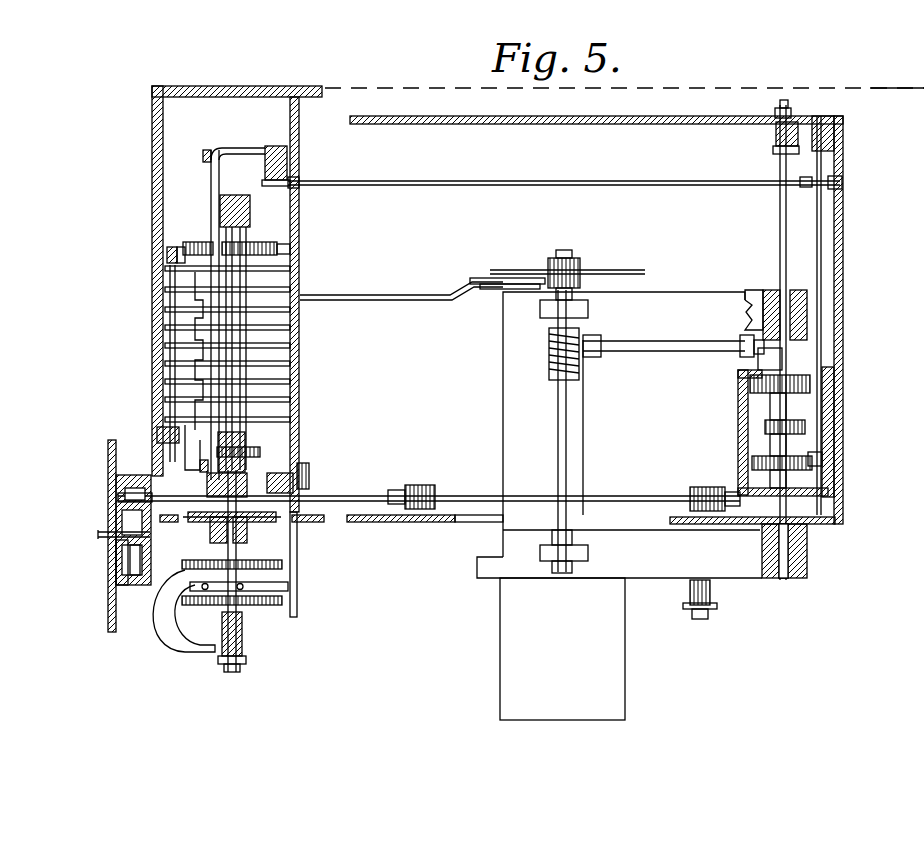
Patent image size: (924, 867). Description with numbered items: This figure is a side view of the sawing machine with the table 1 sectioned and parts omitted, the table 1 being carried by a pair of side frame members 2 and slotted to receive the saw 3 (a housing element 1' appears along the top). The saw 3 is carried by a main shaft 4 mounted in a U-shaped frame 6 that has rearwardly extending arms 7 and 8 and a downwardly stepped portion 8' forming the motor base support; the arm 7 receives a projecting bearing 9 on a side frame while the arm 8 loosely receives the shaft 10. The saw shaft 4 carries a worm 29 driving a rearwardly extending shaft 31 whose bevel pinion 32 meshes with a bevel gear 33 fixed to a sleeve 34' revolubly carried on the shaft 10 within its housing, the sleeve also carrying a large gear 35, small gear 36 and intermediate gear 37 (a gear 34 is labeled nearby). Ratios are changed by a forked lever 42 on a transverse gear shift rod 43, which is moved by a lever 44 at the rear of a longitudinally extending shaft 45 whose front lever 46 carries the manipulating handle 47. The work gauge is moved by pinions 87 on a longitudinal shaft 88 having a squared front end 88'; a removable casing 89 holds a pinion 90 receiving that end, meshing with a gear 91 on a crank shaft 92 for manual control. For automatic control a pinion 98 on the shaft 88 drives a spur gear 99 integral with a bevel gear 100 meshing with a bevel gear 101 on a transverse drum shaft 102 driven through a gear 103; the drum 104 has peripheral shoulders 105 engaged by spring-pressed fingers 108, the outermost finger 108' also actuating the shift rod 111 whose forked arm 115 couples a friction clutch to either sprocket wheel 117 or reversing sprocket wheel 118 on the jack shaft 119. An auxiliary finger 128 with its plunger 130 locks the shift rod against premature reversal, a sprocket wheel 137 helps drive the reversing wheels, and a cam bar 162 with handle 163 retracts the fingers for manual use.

The table 1 is at (538, 285).
The housing cover 1' is at (897, 67).
The side frame members 2 is at (436, 525).
The saw 3 is at (589, 283).
The main shaft 4 is at (577, 470).
The U-shaped frame 6 is at (510, 414).
The arm 7 is at (660, 555).
The arm 8 is at (714, 293).
The downwardly stepped portion 8' is at (585, 649).
The projecting bearing 9 is at (795, 581).
The shaft 10 is at (780, 221).
The worm 29 is at (548, 356).
The rearwardly extending shaft 31 is at (660, 350).
The bevel pinion 32 is at (758, 362).
The bevel gear 33 is at (808, 349).
The gear 34 is at (821, 391).
The sleeve 34' is at (708, 452).
The large gear 35 is at (760, 402).
The small gear 36 is at (752, 446).
The intermediate gear 37 is at (756, 489).
The forked lever 42 is at (812, 467).
The gear shift rod 43 is at (820, 262).
The lever 44 is at (822, 172).
The longitudinally extending shaft 45 is at (520, 184).
The lever 46 is at (272, 172).
The manipulating handle 47 is at (230, 149).
The pinions 87 is at (428, 493).
The shaft 88 is at (429, 481).
The squared front end 88' is at (95, 500).
The casing 89 is at (140, 590).
The pinion 90 is at (137, 470).
The gear 91 is at (115, 616).
The shaft 92 is at (110, 568).
The pinion 98 is at (265, 562).
The spur gear 99 is at (280, 459).
The bevel gear 100 is at (275, 444).
The bevel gear 101 is at (208, 524).
The transverse shaft 102 is at (272, 586).
The gear 103 is at (197, 246).
The drum 104 is at (197, 458).
The shoulders 105 is at (200, 390).
The fingers 108 is at (181, 344).
The outermost finger 108' is at (185, 332).
The shift rod 111 is at (298, 594).
The forked arm 115 is at (268, 604).
The sprocket wheel 117 is at (165, 595).
The sprocket wheel 118 is at (252, 612).
The jack shaft 119 is at (230, 680).
The auxiliary finger 128 is at (478, 284).
The plunger 130 is at (380, 293).
The sprocket wheel 137 is at (722, 612).
The cam bar 162 is at (211, 355).
The manipulating handle 163 is at (211, 155).